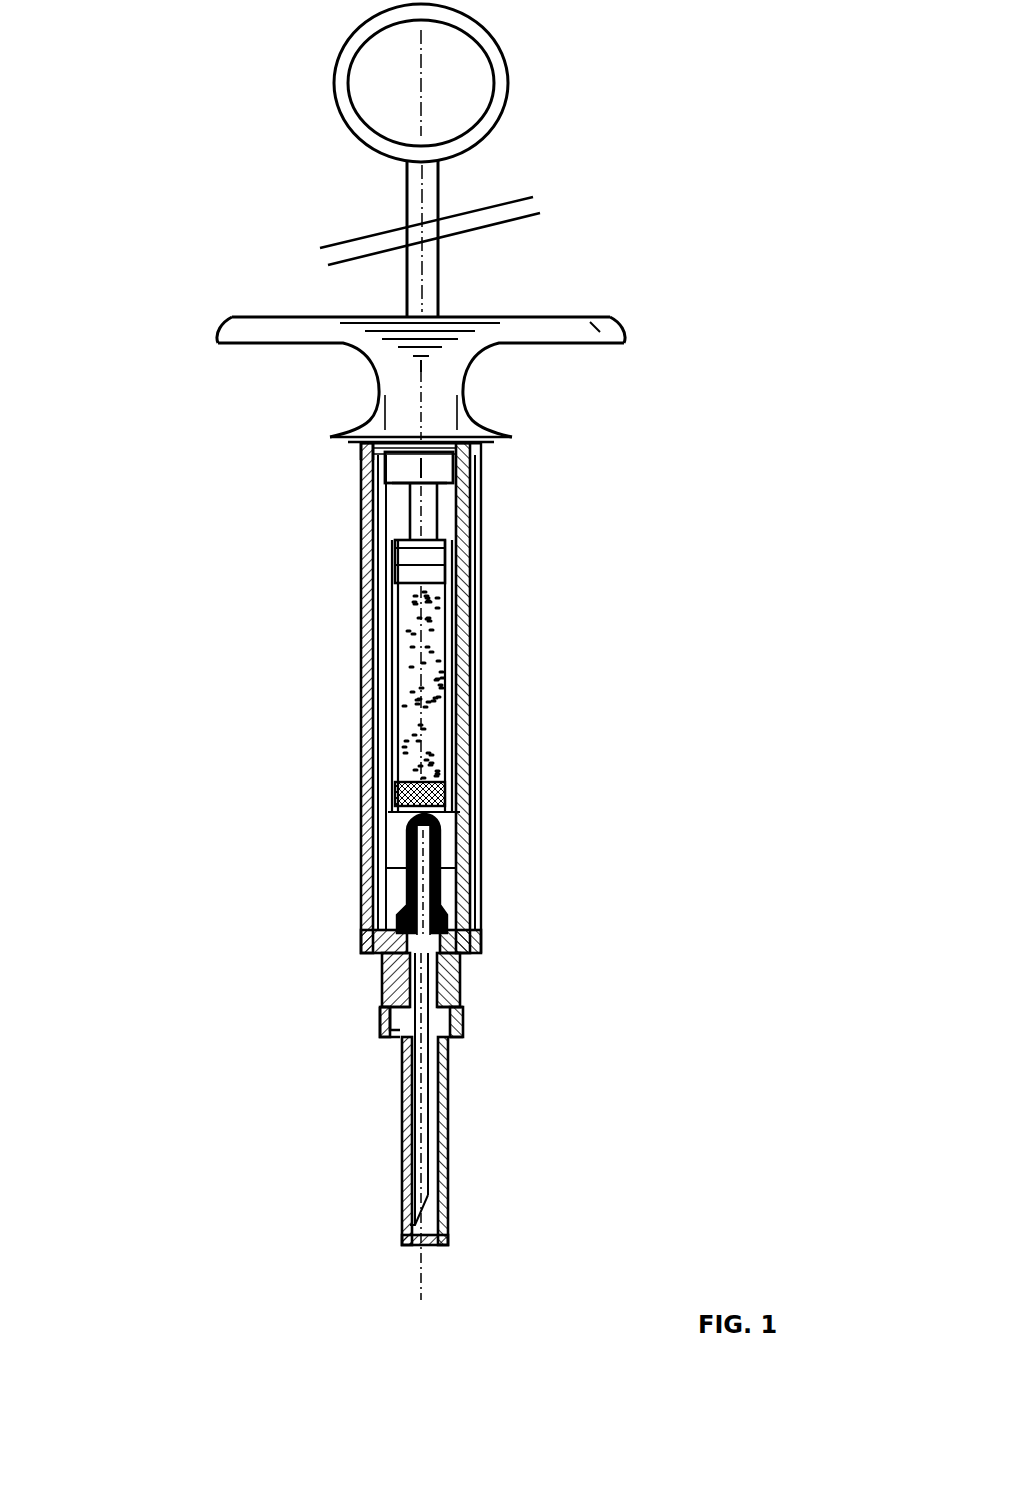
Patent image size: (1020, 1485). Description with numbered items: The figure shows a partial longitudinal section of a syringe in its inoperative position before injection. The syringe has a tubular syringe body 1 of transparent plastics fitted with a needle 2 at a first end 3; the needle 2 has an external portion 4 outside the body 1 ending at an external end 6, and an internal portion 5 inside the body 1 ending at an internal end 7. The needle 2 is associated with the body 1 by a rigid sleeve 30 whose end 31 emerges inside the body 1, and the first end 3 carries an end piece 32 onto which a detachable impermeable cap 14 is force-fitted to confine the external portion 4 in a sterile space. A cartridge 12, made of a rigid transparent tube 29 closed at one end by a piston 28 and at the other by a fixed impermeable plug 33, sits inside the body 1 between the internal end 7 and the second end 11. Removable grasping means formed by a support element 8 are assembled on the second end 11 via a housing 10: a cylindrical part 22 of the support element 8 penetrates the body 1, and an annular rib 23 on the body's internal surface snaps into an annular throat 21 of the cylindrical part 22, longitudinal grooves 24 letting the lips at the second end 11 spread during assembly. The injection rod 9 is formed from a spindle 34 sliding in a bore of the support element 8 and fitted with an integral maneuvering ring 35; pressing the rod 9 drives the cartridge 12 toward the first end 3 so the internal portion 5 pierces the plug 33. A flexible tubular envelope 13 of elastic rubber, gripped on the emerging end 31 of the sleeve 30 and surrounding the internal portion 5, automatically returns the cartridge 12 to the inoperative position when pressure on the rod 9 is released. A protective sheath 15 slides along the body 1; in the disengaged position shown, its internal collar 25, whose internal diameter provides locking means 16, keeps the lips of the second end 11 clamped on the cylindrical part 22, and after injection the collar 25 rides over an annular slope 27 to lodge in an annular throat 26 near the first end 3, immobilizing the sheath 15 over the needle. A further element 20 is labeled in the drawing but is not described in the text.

The syringe body 1 is at (360, 716).
The needle 2 is at (402, 1170).
The first end 3 is at (383, 957).
The external portion 4 is at (452, 1128).
The internal portion 5 is at (483, 871).
The external end 6 is at (403, 1227).
The internal end 7 is at (360, 808).
The support element 8 is at (240, 318).
The injection rod 9 is at (333, 93).
The housing 10 is at (378, 406).
The second end 11 is at (485, 447).
The cartridge 12 is at (382, 628).
The flexible tubular envelope 13 is at (483, 797).
The cap 14 is at (465, 1027).
The protective sheath 15 is at (483, 607).
The locking means 16 is at (483, 441).
The flange edge 20 is at (583, 333).
The annular throat 21 is at (485, 348).
The cylindrical part 22 is at (483, 478).
The annular rib 23 is at (360, 452).
The grooves 24 is at (358, 478).
The internal collar 25 is at (445, 472).
The annular throat 26 is at (483, 888).
The annular slope 27 is at (362, 855).
The piston 28 is at (480, 557).
The tube 29 is at (483, 680).
The rigid sleeve 30 is at (465, 985).
The sleeve end 31 is at (362, 925).
The end piece 32 is at (383, 1007).
The impermeable plug 33 is at (362, 790).
The spindle 34 is at (407, 190).
The maneuvering ring 35 is at (508, 92).